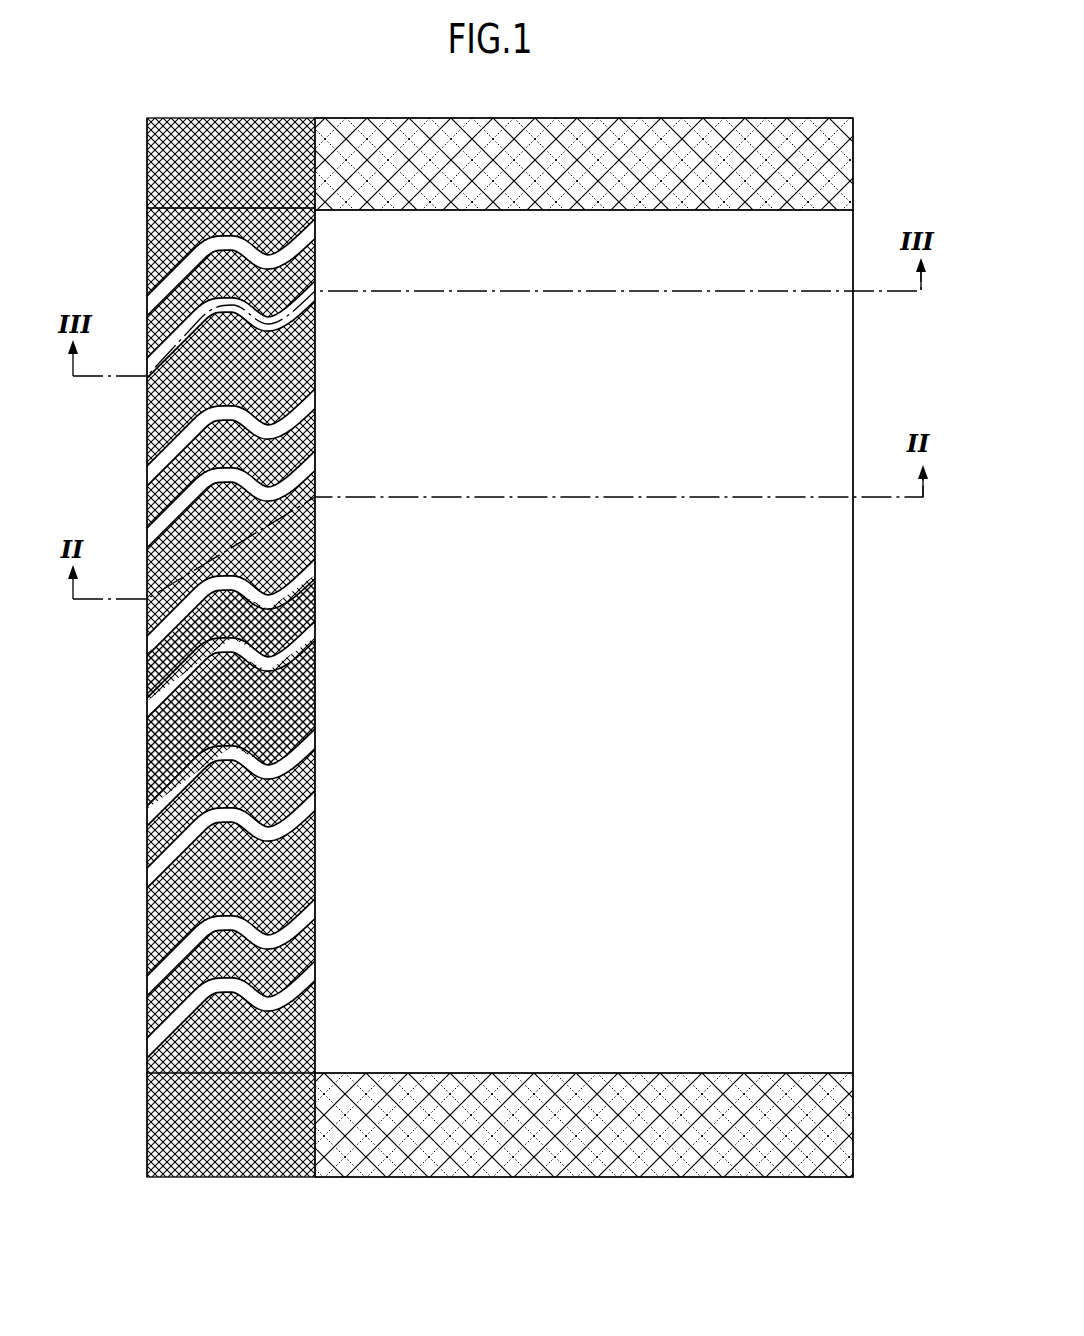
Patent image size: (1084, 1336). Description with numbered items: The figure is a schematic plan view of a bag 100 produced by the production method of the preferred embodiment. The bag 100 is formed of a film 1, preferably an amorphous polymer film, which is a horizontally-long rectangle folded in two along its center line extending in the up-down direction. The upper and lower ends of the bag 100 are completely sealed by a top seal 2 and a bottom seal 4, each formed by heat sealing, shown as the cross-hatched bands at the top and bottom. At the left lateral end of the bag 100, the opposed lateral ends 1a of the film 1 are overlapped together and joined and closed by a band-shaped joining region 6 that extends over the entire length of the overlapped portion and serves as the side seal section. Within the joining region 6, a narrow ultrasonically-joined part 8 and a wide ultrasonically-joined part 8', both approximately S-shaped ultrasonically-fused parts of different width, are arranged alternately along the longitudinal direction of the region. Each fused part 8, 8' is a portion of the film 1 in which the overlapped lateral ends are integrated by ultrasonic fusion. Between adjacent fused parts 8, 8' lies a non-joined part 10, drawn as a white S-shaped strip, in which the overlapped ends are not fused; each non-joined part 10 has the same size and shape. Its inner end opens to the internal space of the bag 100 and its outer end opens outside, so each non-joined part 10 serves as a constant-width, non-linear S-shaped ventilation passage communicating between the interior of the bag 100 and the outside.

The bag 100 is at (866, 122).
The film 1 is at (813, 423).
The lateral end of the film 1a is at (147, 941).
The top seal 2 is at (757, 137).
The bottom seal 4 is at (757, 1157).
The band-shaped joining region 6 is at (193, 647).
The narrow ultrasonically-joined part 8 is at (203, 647).
The wide ultrasonically-joined part 8' is at (201, 723).
The non-joined part 10 is at (158, 471).